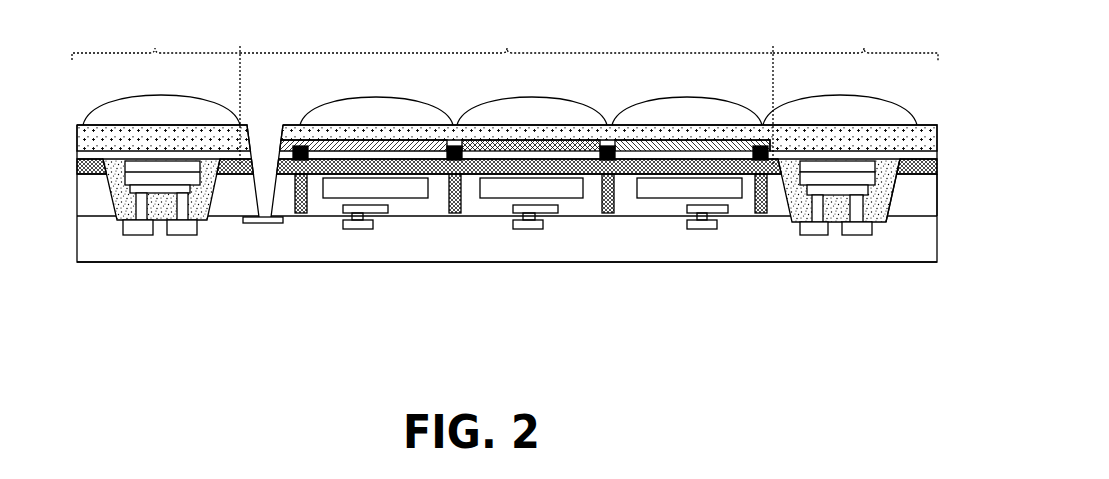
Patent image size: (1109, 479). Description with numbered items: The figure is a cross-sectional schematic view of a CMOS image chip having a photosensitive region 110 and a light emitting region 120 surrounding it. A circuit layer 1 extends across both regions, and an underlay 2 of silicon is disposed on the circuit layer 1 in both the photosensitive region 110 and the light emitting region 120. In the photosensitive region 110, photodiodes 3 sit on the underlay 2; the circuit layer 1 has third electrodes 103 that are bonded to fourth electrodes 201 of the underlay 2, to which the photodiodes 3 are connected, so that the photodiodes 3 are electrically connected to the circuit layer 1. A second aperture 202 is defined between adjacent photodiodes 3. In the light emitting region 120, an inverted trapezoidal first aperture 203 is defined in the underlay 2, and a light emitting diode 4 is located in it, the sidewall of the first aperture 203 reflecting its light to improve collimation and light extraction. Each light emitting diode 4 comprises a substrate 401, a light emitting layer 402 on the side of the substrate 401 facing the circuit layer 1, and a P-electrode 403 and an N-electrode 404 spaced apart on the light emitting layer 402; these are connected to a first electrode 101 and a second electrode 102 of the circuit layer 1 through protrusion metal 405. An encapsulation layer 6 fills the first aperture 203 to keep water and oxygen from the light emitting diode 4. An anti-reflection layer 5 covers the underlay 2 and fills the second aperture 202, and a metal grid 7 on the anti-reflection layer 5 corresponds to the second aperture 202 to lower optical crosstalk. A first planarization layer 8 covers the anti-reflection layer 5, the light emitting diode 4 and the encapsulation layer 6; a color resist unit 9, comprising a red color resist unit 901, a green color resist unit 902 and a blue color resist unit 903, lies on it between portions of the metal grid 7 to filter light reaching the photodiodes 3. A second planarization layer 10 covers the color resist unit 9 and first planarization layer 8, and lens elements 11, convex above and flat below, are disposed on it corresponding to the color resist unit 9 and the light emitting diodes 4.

The circuit layer 1 is at (535, 258).
The underlay 2 is at (935, 197).
The photodiodes 3 is at (415, 190).
The light emitting diodes 4 is at (827, 263).
The anti-reflection layer 5 is at (577, 163).
The encapsulation layer 6 is at (205, 222).
The metal grid 7 is at (456, 147).
The first planarization layer 8 is at (518, 157).
The color resist unit 9 is at (525, 106).
The red color resist unit 901 is at (340, 146).
The green color resist unit 902 is at (497, 142).
The blue color resist unit 903 is at (665, 145).
The second planarization layer 10 is at (937, 146).
The lens elements 11 is at (123, 115).
The first electrode 101 is at (818, 235).
The second electrode 102 is at (863, 237).
The third electrodes 103 is at (355, 229).
The photosensitive region 110 is at (506, 42).
The light emitting region 120 is at (505, 98).
The fourth electrodes 201 is at (377, 212).
The second aperture 202 is at (613, 203).
The first aperture 203 is at (890, 205).
The substrate 401 is at (817, 167).
The light emitting layer 402 is at (847, 193).
The P-electrode 403 is at (850, 180).
The N-electrode 404 is at (832, 222).
The protrusion metal 405 is at (818, 190).